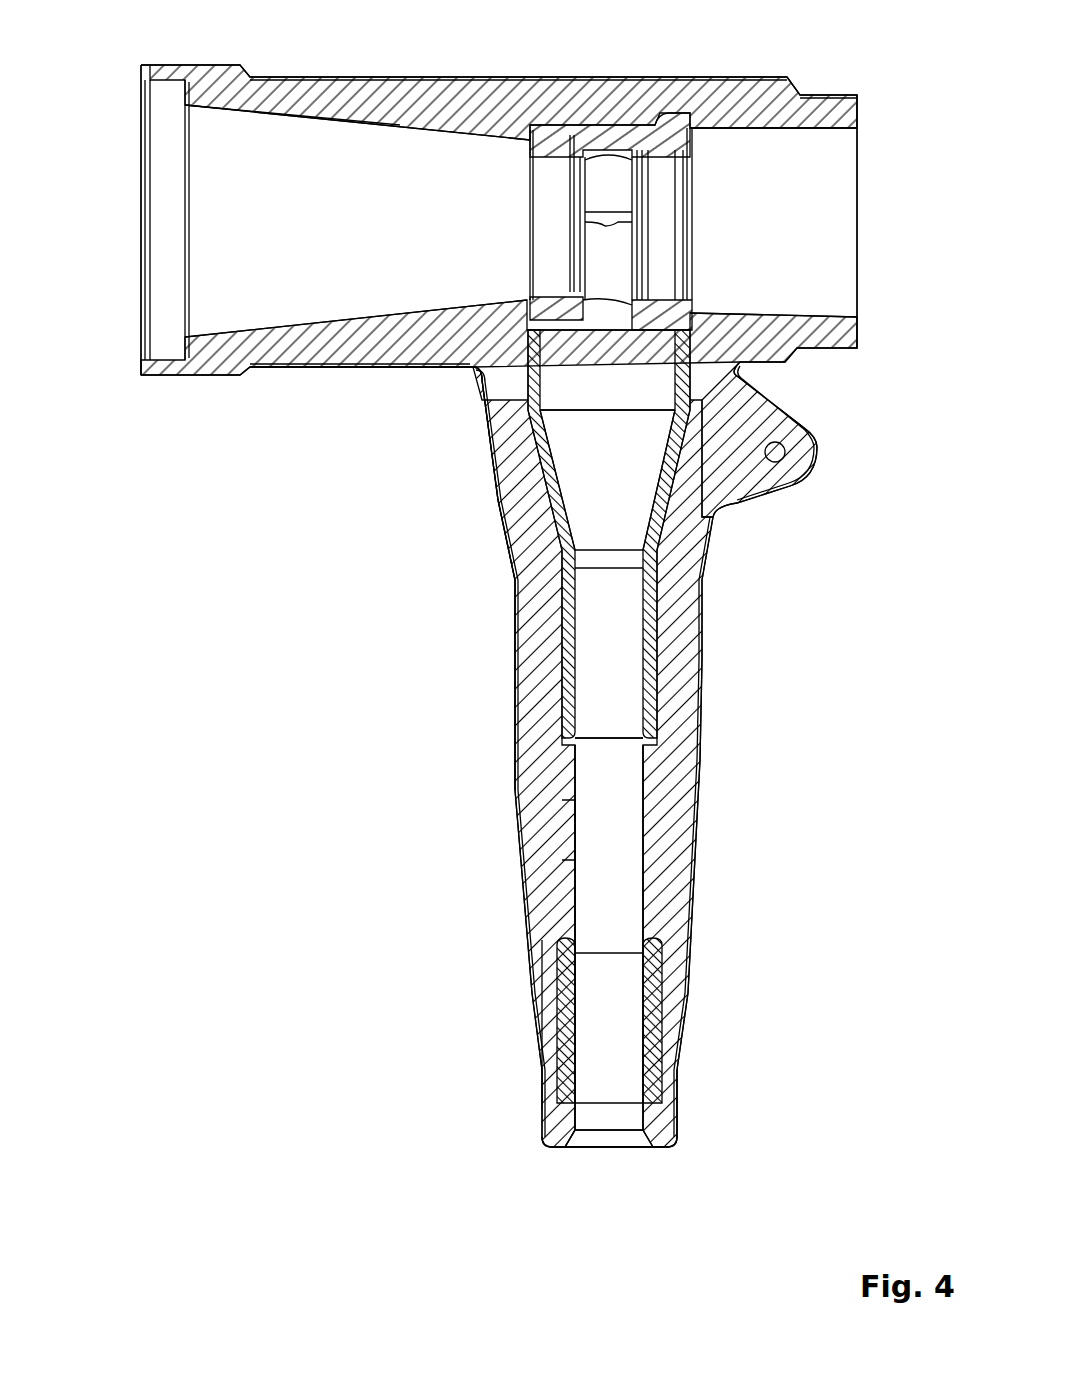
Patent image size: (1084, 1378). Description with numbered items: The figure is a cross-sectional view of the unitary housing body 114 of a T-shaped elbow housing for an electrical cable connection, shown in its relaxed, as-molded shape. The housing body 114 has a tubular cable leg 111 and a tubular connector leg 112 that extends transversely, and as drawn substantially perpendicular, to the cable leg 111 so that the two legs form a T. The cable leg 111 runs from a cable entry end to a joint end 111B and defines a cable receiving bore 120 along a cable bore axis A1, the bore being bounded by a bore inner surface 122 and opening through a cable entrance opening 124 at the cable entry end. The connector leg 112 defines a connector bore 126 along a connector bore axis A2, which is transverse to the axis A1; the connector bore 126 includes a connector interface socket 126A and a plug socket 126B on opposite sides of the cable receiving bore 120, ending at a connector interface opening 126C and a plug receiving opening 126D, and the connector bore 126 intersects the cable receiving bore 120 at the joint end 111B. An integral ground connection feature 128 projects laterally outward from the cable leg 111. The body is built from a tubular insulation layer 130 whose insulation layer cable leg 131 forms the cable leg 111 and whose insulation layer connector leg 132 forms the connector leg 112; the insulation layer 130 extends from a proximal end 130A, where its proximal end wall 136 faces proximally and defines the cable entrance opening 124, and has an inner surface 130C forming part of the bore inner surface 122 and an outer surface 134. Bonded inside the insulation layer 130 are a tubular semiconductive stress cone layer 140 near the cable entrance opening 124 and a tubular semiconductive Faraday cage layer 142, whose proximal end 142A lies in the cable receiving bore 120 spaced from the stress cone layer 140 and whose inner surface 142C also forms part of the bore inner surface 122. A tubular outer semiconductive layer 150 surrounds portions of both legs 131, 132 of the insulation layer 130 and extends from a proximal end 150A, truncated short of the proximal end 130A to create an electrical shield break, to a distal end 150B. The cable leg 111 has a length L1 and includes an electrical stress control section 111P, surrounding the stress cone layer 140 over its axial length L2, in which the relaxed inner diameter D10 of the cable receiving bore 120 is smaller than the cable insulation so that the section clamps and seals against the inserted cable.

The housing body 114 is at (500, 634).
The connector bore 126 is at (500, 281).
The connector interface socket 126A is at (317, 137).
The plug socket 126B is at (762, 150).
The connector interface opening 126C is at (147, 245).
The plug receiving opening 126D is at (858, 202).
The distal end of outer semiconductive layer 150B is at (622, 78).
The ground connection feature 128 is at (760, 490).
The cable leg 111 is at (576, 793).
The joint end 111B is at (456, 386).
The electrical stress control section 111P is at (707, 940).
The connector leg 112 is at (287, 377).
The insulation layer connector leg 132 is at (344, 369).
The insulation layer 130 is at (540, 690).
The proximal end of insulation layer 130A is at (528, 1140).
The inner surface of insulation layer 130C is at (578, 818).
The insulation layer cable leg 131 is at (508, 630).
The outer surface of insulation layer 134 is at (512, 580).
The outer semiconductive layer 150 is at (497, 498).
The proximal end of outer semiconductive layer 150A is at (673, 1125).
The Faraday cage layer 142 is at (567, 547).
The proximal end of Faraday cage layer 142A is at (588, 738).
The inner surface of Faraday cage layer 142C is at (560, 447).
The cable receiving bore 120 is at (625, 797).
The bore inner surface 122 is at (588, 874).
The cable entrance opening 124 is at (648, 1150).
The proximal end wall 136 is at (555, 1150).
The stress cone layer 140 is at (560, 1070).
The cable bore axis A1 is at (621, 1248).
The connector bore axis A2 is at (316, 232).
The relaxed inner diameter D10 is at (577, 913).
The length of cable leg L1 is at (889, 363).
The axial length of stress cone layer L2 is at (808, 941).